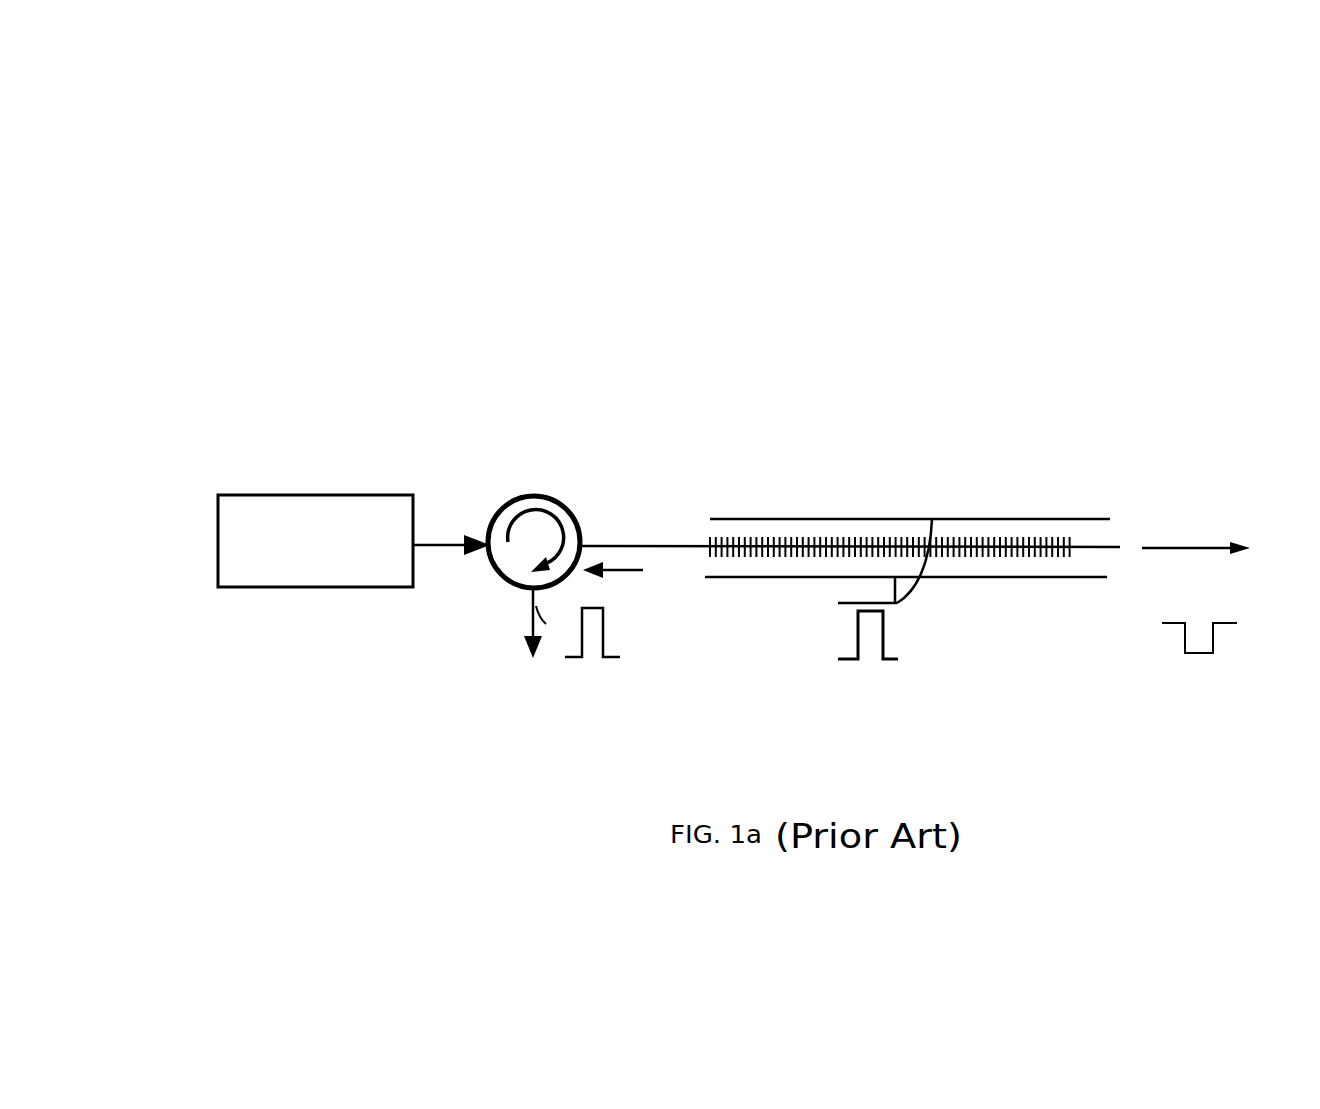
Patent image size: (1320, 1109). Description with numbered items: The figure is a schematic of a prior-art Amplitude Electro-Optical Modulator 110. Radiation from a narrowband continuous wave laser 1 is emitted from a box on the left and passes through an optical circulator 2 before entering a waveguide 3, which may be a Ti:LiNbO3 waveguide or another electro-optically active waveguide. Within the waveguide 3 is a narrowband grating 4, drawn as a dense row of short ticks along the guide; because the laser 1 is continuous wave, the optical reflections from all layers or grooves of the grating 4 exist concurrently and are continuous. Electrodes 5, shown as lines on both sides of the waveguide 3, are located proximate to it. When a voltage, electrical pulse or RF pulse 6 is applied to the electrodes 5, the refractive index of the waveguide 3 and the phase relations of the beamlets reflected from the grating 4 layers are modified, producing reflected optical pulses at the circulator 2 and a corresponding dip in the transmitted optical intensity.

The Amplitude Electro-Optical Modulator 110 is at (236, 296).
The continuous wave laser 1 is at (346, 495).
The optical circulator 2 is at (545, 497).
The waveguide 3 is at (674, 526).
The narrowband grating 4 is at (872, 525).
The electrodes 5 is at (997, 501).
The RF pulse 6 is at (866, 569).